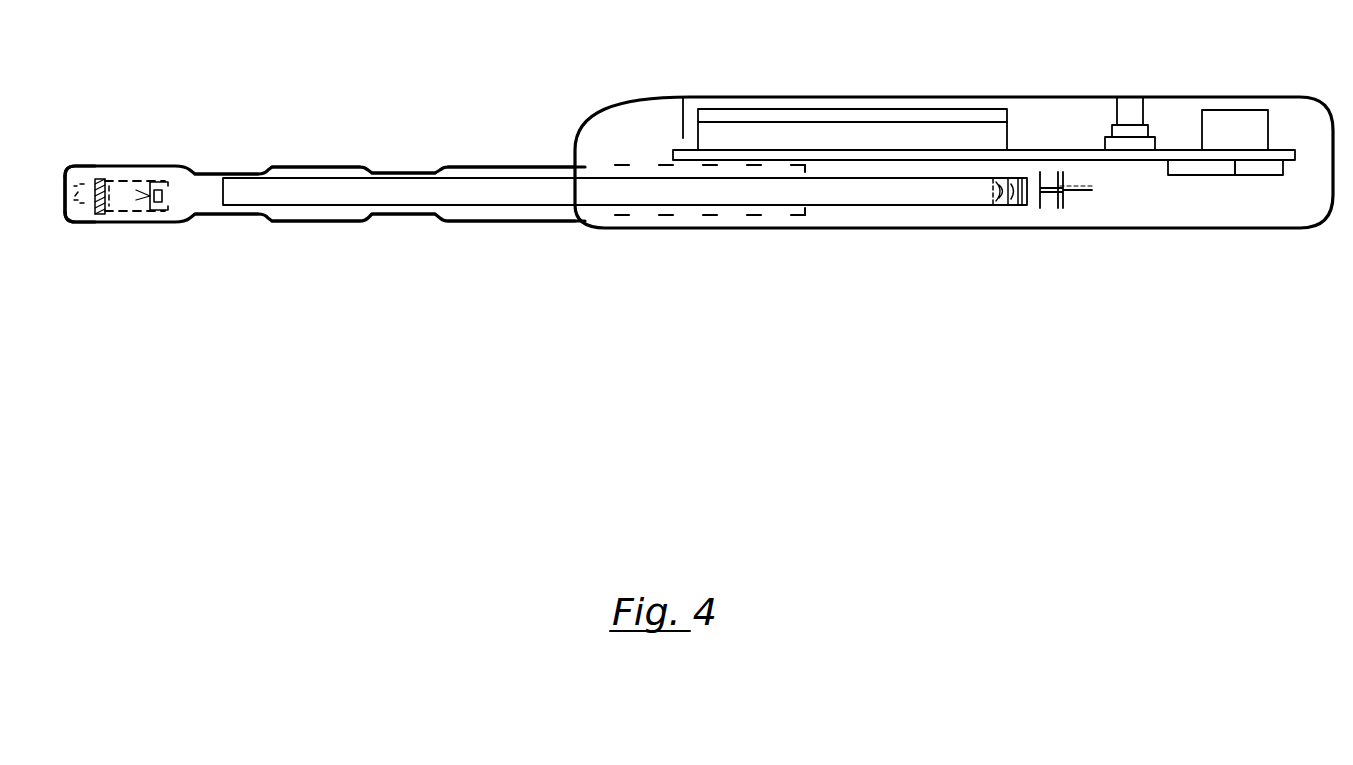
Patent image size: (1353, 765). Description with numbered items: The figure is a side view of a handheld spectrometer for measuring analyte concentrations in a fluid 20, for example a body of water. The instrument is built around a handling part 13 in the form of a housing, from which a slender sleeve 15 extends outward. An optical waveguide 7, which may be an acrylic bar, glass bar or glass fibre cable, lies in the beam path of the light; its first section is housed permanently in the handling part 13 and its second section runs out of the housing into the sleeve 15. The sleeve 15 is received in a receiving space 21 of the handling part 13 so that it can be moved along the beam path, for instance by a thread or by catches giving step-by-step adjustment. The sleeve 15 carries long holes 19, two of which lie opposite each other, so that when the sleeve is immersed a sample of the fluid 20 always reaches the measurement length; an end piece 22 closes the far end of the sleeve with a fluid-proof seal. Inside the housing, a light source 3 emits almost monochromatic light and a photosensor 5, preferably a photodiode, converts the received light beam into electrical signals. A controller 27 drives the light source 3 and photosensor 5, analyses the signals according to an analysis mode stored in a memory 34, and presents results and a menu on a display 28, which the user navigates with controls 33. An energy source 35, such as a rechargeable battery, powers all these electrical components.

The light source 3 is at (1041, 195).
The photosensor 5 is at (129, 190).
The optical waveguide 7 is at (530, 192).
The handling part 13 is at (848, 228).
The sleeve 15 is at (338, 162).
The long hole 19 is at (207, 168).
The fluid 20 is at (218, 427).
The receiving space 21 is at (662, 212).
The end piece 22 is at (100, 222).
The controller 27 is at (1183, 165).
The display 28 is at (902, 120).
The controls 33 is at (1133, 112).
The memory 34 is at (1260, 170).
The energy source 35 is at (1243, 120).